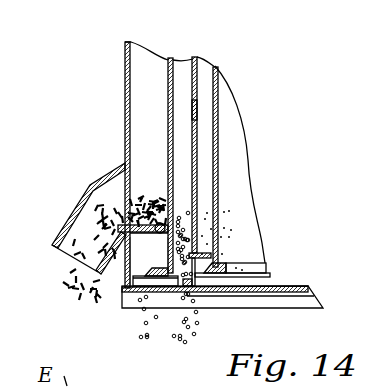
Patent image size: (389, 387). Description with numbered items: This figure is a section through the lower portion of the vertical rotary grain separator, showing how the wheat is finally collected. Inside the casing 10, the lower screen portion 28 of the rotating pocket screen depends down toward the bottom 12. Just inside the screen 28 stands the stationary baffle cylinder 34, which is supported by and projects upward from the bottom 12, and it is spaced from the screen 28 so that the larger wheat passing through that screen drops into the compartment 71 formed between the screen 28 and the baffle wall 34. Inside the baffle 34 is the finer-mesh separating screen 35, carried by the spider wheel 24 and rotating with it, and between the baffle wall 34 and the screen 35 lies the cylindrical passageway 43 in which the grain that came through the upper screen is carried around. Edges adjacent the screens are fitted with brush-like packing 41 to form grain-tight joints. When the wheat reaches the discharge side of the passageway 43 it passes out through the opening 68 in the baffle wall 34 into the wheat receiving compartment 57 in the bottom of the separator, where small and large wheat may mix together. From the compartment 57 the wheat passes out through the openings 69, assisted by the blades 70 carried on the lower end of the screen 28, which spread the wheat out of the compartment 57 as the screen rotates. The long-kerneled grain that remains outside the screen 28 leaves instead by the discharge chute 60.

The casing 10 is at (125, 105).
The bottom 12 is at (265, 297).
The spider wheel 24 is at (260, 266).
The lower screen portion 28 is at (172, 78).
The baffle cylinder 34 is at (198, 108).
The separating screen 35 is at (217, 177).
The packing 41 is at (215, 252).
The passageway 43 is at (203, 155).
The wheat receiving compartment 57 is at (140, 258).
The discharge chute 60 is at (78, 221).
The opening 68 is at (192, 218).
The openings 69 is at (160, 292).
The blades 70 is at (147, 280).
The compartment 71 is at (182, 70).